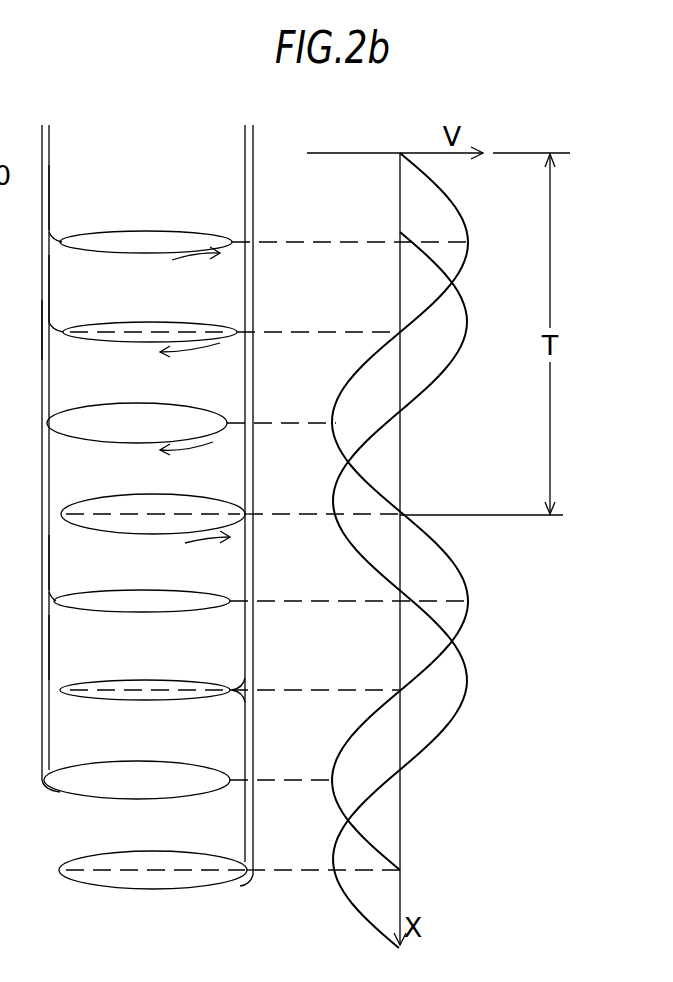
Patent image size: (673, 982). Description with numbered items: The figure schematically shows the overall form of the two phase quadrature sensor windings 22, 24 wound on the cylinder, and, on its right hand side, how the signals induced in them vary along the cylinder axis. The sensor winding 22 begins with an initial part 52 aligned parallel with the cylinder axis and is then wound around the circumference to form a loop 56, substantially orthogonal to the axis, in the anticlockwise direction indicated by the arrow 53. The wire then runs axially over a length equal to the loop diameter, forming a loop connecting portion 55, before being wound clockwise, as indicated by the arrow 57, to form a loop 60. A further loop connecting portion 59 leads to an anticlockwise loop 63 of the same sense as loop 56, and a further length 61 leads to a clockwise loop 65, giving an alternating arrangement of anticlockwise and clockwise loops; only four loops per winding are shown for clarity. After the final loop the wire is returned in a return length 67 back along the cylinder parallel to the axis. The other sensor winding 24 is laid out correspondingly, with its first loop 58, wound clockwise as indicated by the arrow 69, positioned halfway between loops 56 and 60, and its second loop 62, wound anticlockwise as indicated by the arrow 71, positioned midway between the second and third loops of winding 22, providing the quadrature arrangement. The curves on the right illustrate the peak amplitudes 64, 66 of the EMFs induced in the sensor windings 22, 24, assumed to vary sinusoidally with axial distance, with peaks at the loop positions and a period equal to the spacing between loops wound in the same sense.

The sensor winding 22 is at (50, 163).
The sensor winding 24 is at (244, 163).
The initial part 52 is at (50, 197).
The arrow 53 is at (200, 263).
The loop connecting portion 55 is at (50, 298).
The loop 56 is at (155, 231).
The arrow 57 is at (200, 445).
The first loop 58 is at (128, 322).
The loop connecting portion 59 is at (50, 558).
The loop 60 is at (140, 403).
The length 61 is at (50, 652).
The second loop 62 is at (88, 497).
The loop 63 is at (142, 590).
The peak amplitude 64 is at (451, 199).
The loop 65 is at (165, 756).
The peak amplitude 66 is at (433, 267).
The return length 67 is at (42, 326).
The arrow 69 is at (208, 347).
The arrow 71 is at (212, 545).